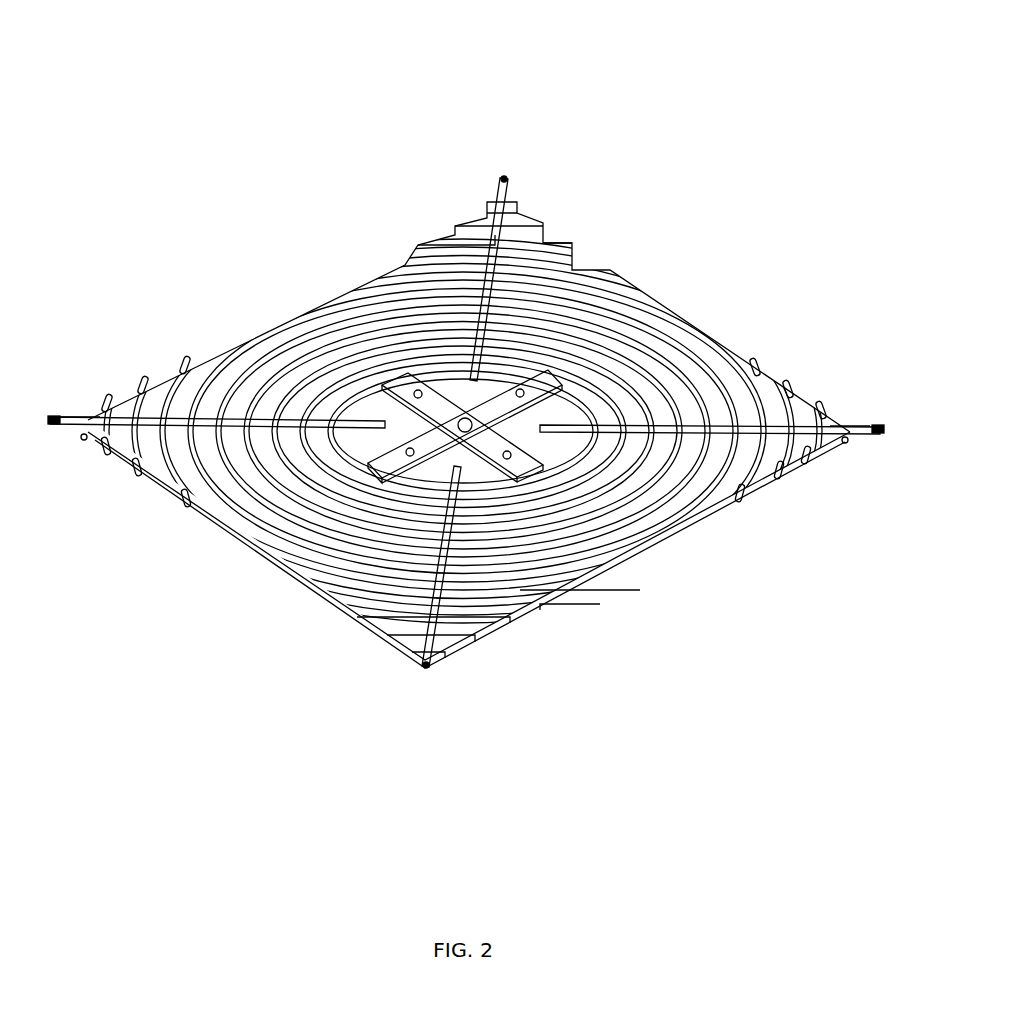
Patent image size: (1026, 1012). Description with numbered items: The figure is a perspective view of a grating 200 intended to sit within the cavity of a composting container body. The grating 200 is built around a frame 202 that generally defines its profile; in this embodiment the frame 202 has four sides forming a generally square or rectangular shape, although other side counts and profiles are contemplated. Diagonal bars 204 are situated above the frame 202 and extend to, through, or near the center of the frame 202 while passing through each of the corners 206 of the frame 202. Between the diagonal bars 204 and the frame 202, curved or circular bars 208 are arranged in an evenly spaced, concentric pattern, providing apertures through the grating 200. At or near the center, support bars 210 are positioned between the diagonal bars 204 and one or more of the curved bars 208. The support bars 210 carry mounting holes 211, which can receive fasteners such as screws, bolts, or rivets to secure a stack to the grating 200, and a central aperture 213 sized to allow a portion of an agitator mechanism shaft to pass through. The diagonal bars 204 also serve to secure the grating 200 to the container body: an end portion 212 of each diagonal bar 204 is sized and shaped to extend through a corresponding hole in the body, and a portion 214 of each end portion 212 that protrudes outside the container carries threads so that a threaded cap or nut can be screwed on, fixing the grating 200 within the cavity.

The grating 200 is at (150, 57).
The frame 202 is at (575, 592).
The diagonal bars 204 is at (122, 428).
The corners 206 is at (84, 439).
The curved bars 208 is at (367, 403).
The support bars 210 is at (402, 382).
The mounting holes 211 is at (505, 458).
The end portion 212 is at (70, 416).
The central aperture 213 is at (468, 420).
The portion 214 is at (53, 415).